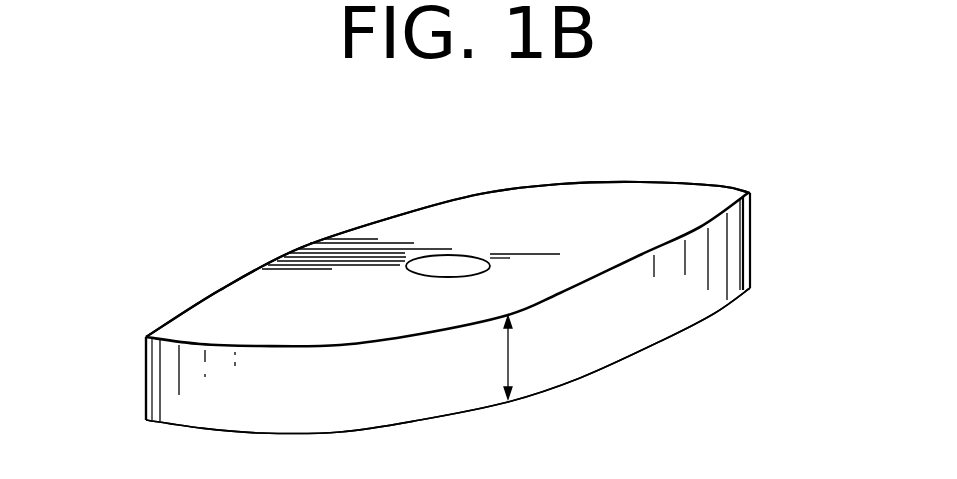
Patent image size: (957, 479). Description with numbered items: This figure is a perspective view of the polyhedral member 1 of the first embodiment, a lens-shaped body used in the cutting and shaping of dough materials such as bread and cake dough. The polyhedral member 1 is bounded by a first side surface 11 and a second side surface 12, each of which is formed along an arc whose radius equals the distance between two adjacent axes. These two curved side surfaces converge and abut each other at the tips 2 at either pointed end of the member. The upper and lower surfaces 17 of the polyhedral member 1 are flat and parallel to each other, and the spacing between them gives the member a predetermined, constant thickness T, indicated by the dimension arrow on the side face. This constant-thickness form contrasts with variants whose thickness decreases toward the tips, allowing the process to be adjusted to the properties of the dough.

The polyhedral member 1 is at (742, 177).
The tips 2 is at (145, 390).
The first side surface 11 is at (440, 398).
The second side surface 12 is at (577, 212).
The upper and lower surfaces 17 is at (318, 250).
The thickness T is at (520, 357).